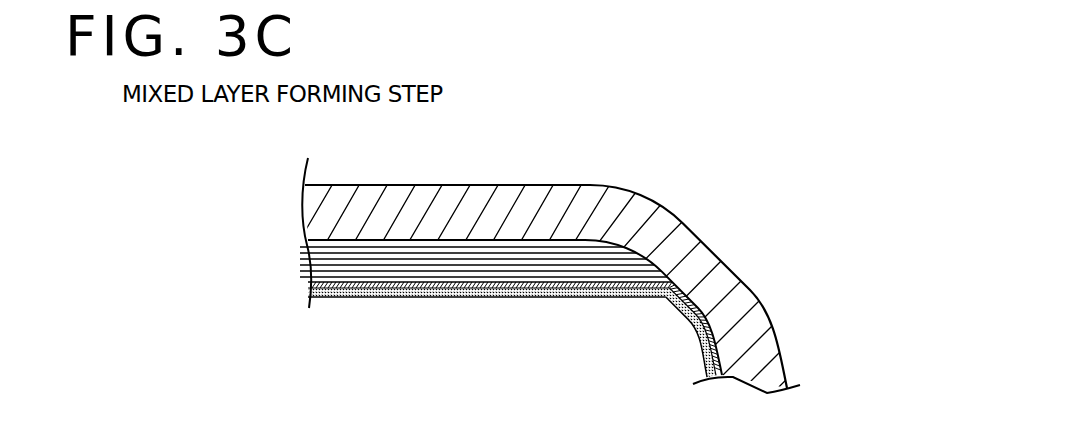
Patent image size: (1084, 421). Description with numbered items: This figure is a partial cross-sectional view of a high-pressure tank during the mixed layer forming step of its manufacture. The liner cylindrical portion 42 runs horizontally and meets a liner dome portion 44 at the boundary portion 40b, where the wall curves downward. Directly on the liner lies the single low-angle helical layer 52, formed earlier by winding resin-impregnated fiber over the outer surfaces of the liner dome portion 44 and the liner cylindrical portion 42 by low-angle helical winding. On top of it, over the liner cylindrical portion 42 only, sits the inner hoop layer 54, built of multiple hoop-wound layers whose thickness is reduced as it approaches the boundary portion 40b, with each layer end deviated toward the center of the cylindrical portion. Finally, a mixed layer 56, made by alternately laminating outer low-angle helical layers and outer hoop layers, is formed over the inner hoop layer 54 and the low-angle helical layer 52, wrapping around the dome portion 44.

The mixed layer 56 is at (396, 185).
The inner hoop layer 54 is at (320, 264).
The low-angle helical layer 52 is at (316, 282).
The liner cylindrical portion 42 is at (478, 298).
The liner dome portion 44 is at (686, 300).
The boundary portion 40b is at (687, 278).